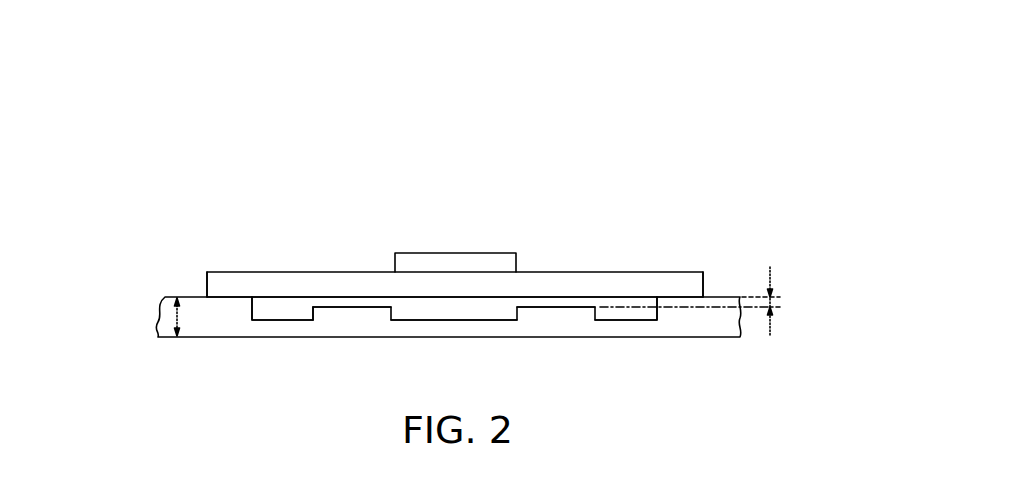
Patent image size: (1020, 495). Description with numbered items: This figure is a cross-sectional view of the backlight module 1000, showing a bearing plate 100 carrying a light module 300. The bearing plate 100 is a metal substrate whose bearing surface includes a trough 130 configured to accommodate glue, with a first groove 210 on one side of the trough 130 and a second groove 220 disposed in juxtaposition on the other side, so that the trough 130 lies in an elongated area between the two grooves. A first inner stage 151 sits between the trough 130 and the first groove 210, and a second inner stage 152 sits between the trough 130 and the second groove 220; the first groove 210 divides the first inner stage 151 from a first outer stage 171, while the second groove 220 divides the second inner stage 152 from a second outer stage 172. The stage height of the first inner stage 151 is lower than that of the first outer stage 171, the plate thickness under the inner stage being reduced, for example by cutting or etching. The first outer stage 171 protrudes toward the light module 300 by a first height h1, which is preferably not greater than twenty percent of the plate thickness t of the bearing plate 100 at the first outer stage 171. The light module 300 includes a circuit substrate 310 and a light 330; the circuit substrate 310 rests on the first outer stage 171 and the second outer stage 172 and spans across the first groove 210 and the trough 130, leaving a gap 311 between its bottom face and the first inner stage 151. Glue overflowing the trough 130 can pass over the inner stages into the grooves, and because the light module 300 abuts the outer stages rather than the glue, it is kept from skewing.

The backlight module 1000 is at (160, 42).
The bearing plate 100 is at (693, 325).
The trough 130 is at (473, 310).
The first inner stage 151 is at (347, 305).
The second inner stage 152 is at (581, 302).
The first outer stage 171 is at (194, 292).
The second outer stage 172 is at (719, 292).
The first groove 210 is at (271, 315).
The second groove 220 is at (641, 311).
The light module 300 is at (455, 216).
The circuit substrate 310 is at (363, 283).
The gap 311 is at (313, 304).
The light 330 is at (432, 262).
The plate thickness t is at (182, 317).
The first height h1 is at (704, 302).